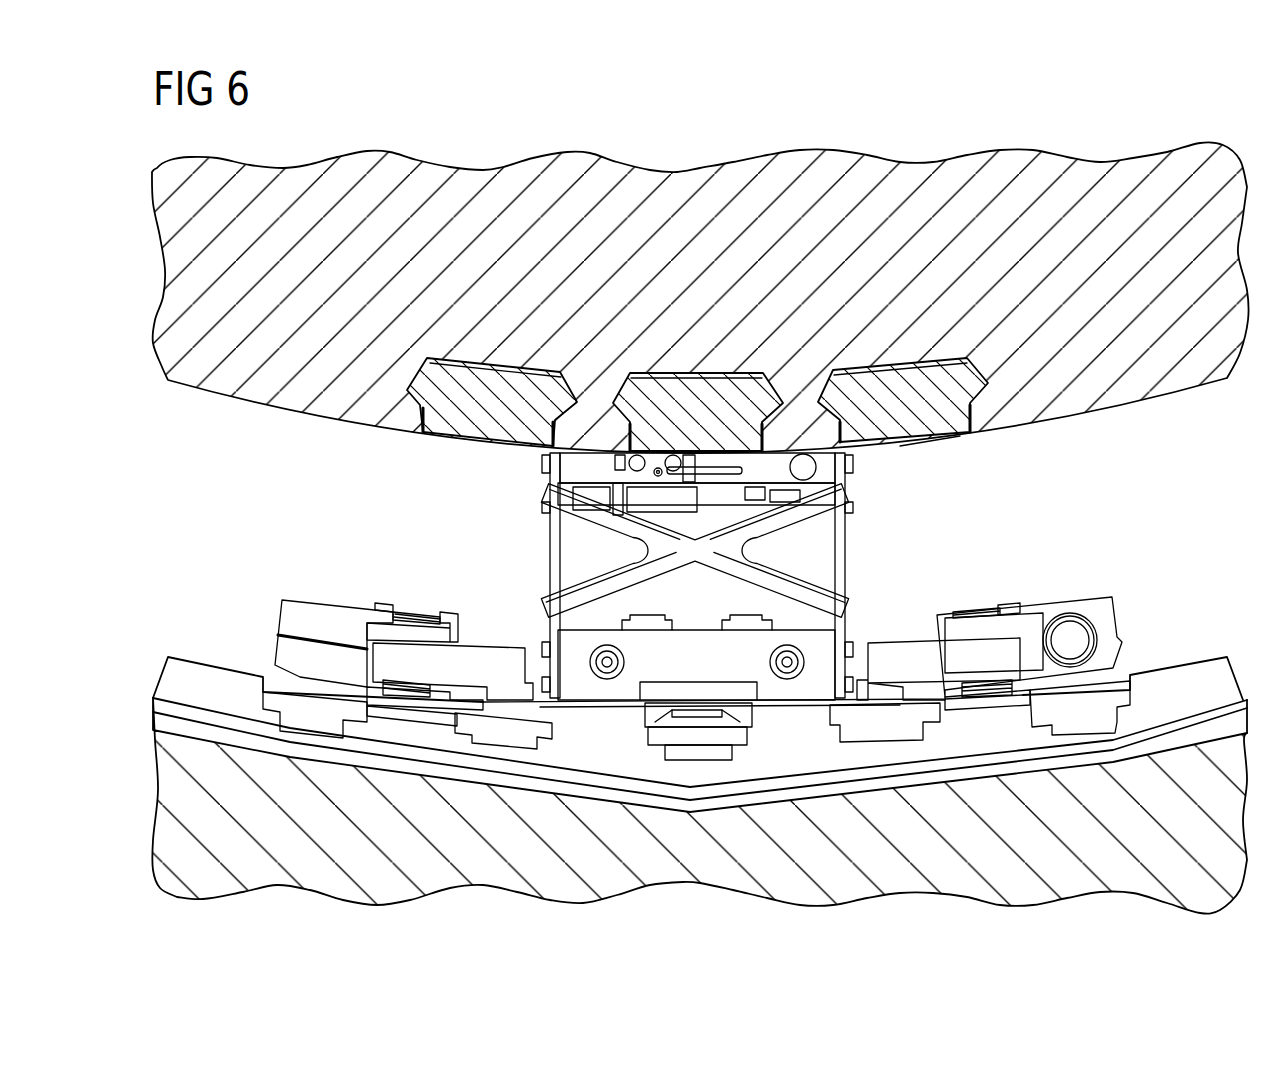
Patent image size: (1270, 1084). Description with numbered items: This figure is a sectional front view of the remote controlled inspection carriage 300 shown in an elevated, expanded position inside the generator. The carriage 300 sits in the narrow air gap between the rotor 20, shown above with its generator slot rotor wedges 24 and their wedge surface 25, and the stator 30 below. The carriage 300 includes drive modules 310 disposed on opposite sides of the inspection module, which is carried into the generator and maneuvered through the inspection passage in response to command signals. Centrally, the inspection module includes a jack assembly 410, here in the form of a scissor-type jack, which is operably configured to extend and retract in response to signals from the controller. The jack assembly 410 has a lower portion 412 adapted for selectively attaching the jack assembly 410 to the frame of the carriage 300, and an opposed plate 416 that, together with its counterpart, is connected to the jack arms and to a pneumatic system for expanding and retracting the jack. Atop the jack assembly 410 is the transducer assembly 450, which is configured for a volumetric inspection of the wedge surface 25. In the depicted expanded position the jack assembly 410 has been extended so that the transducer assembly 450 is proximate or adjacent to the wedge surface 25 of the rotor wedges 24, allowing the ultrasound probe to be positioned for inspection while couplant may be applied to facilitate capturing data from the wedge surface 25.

The rotor 20 is at (707, 260).
The generator slot rotor wedges 24 is at (498, 407).
The wedge surface 25 is at (933, 440).
The stator 30 is at (718, 859).
The carriage 300 is at (287, 495).
The drive modules 310 is at (360, 582).
The jack assembly 410 is at (502, 540).
The lower portion 412 is at (882, 498).
The opposed plate 416 is at (716, 664).
The transducer assembly 450 is at (502, 473).